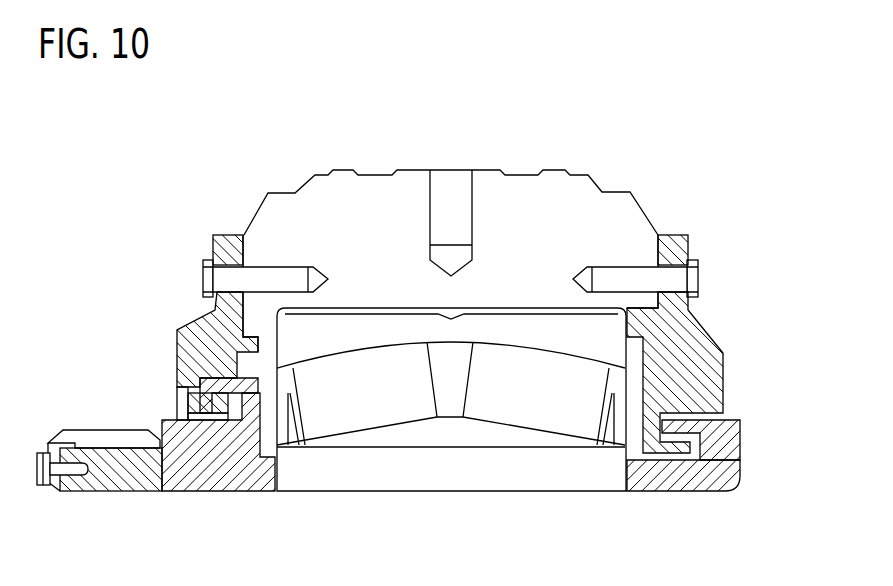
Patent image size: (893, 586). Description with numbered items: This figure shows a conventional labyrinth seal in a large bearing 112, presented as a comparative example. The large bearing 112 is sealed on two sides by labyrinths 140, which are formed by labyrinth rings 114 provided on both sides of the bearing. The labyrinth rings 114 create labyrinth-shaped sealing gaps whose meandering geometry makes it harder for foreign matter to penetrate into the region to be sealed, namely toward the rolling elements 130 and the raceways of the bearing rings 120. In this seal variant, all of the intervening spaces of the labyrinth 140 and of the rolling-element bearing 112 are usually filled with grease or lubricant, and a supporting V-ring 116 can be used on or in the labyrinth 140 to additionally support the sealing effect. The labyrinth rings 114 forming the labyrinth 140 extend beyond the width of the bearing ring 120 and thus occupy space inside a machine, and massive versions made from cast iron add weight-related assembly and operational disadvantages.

The large bearing 112 is at (642, 150).
The labyrinth ring 114 is at (207, 322).
The V-ring 116 is at (183, 408).
The bearing ring 120 is at (580, 478).
The rolling element 130 is at (499, 408).
The labyrinth 140 is at (210, 385).